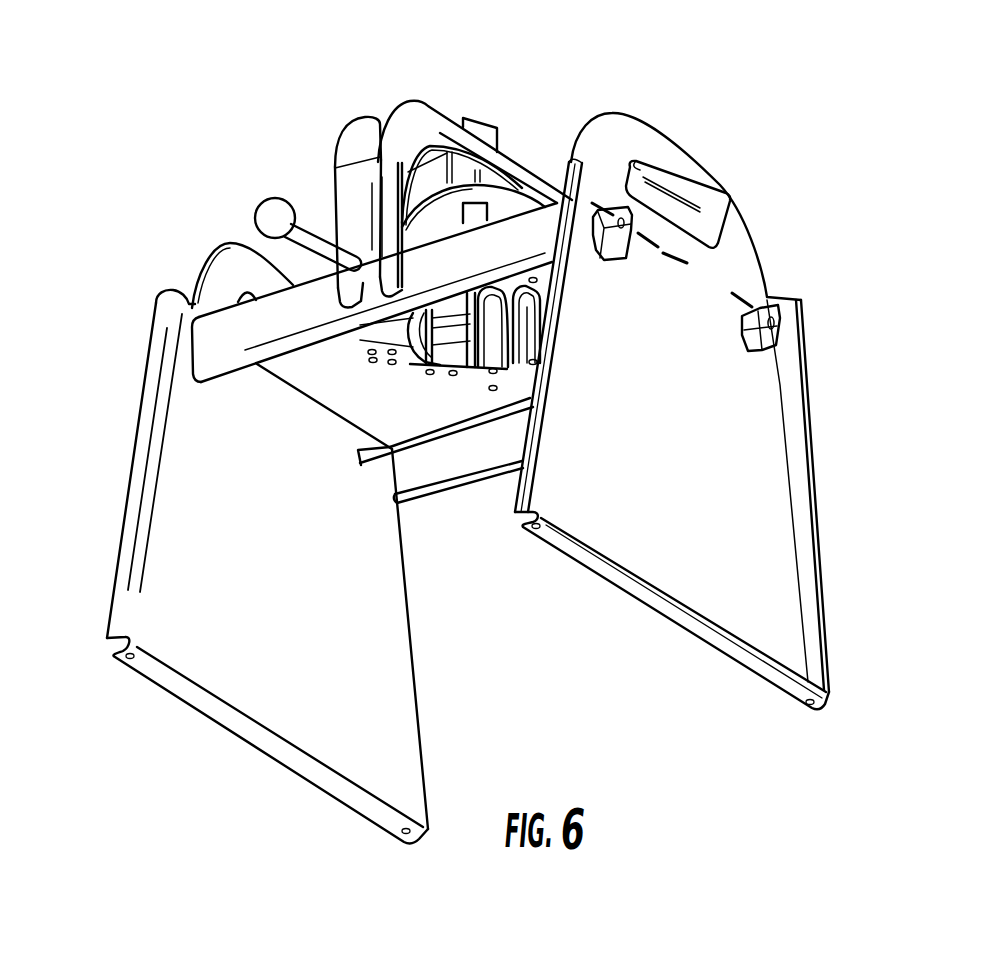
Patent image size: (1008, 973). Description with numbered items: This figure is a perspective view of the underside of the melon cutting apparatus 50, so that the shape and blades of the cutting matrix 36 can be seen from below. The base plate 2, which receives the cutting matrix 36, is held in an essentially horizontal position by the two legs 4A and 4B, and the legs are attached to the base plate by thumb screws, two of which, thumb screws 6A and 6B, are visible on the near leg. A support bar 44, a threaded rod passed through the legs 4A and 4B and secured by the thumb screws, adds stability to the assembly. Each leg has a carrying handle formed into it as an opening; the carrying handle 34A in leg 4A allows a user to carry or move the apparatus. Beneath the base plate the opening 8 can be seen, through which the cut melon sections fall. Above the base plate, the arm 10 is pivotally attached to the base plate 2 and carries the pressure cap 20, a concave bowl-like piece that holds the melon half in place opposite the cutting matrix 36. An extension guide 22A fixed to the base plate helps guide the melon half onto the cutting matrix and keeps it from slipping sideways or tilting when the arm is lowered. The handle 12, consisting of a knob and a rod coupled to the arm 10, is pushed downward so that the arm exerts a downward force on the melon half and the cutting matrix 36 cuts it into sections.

The base plate 2 is at (207, 335).
The leg 4A is at (780, 515).
The leg 4B is at (165, 473).
The thumb screw 6A is at (617, 258).
The thumb screw 6B is at (770, 353).
The opening 8 is at (398, 392).
The arm 10 is at (420, 125).
The handle 12 is at (313, 230).
The pressure cap 20 is at (513, 190).
The extension guide 22A is at (473, 218).
The carrying handle 34A is at (703, 233).
The cutting matrix 36 is at (507, 350).
The support bar 44 is at (503, 413).
The apparatus 50 is at (749, 767).